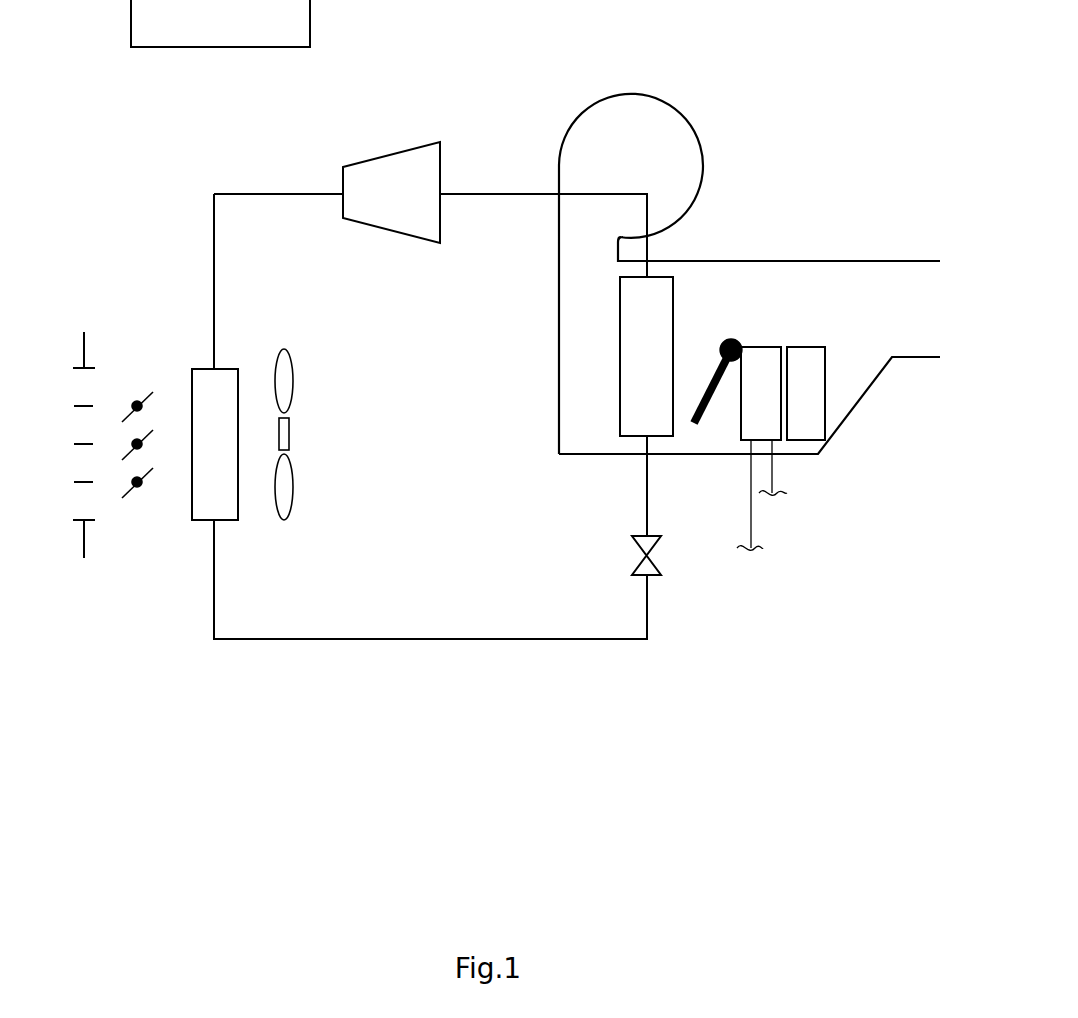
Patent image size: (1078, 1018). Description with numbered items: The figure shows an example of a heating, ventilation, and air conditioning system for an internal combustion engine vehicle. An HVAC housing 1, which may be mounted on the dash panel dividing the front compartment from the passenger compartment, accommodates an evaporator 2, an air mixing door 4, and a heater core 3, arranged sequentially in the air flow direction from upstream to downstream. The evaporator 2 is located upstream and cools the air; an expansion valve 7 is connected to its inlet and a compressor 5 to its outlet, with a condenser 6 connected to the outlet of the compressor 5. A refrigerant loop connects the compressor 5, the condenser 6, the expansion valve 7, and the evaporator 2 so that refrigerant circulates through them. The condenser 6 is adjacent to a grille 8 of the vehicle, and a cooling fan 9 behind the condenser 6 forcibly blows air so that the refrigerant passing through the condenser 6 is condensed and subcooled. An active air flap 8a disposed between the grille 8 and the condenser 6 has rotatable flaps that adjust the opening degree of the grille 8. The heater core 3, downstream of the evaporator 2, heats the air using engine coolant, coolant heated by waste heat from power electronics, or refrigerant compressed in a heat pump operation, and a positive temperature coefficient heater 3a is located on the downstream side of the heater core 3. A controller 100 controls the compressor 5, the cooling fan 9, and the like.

The HVAC housing 1 is at (820, 261).
The evaporator 2 is at (625, 393).
The heater core 3 is at (752, 418).
The positive temperature coefficient (PTC) heater 3a is at (815, 407).
The air mixing door 4 is at (712, 380).
The compressor 5 is at (388, 152).
The condenser 6 is at (203, 503).
The expansion valve 7 is at (640, 547).
The grille 8 is at (63, 442).
The active air flap 8a is at (148, 363).
The cooling fan 9 is at (293, 485).
The controller 100 is at (310, 20).